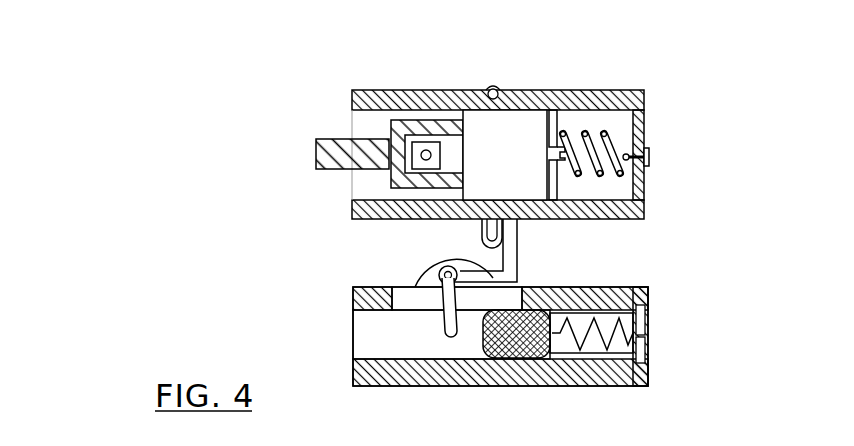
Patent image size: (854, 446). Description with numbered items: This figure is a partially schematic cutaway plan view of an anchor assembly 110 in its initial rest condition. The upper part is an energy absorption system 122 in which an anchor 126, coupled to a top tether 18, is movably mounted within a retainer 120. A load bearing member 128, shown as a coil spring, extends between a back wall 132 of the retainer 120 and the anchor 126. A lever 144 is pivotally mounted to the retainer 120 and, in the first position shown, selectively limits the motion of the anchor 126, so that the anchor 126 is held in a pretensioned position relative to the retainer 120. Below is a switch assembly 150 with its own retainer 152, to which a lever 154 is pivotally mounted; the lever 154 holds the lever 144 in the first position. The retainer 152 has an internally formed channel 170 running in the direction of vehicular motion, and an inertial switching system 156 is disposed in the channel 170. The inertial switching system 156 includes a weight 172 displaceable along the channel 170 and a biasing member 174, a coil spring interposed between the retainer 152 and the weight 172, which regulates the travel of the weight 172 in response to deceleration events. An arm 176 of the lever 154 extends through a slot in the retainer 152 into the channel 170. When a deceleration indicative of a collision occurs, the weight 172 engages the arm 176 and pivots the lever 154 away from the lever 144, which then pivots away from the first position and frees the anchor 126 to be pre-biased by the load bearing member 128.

The anchor assembly 110 is at (122, 60).
The top tether 18 is at (334, 141).
The retainer 120 is at (442, 91).
The energy absorption system 122 is at (375, 125).
The anchor 126 is at (522, 130).
The load bearing member 128 is at (577, 150).
The back wall 132 is at (645, 186).
The lever 144 is at (484, 237).
The lever 154 is at (470, 254).
The switch assembly 150 is at (350, 335).
The retainer 152 is at (362, 387).
The inertial switching system 156 is at (608, 311).
The channel 170 is at (387, 361).
The weight 172 is at (513, 347).
The biasing member 174 is at (585, 345).
The arm 176 is at (440, 337).